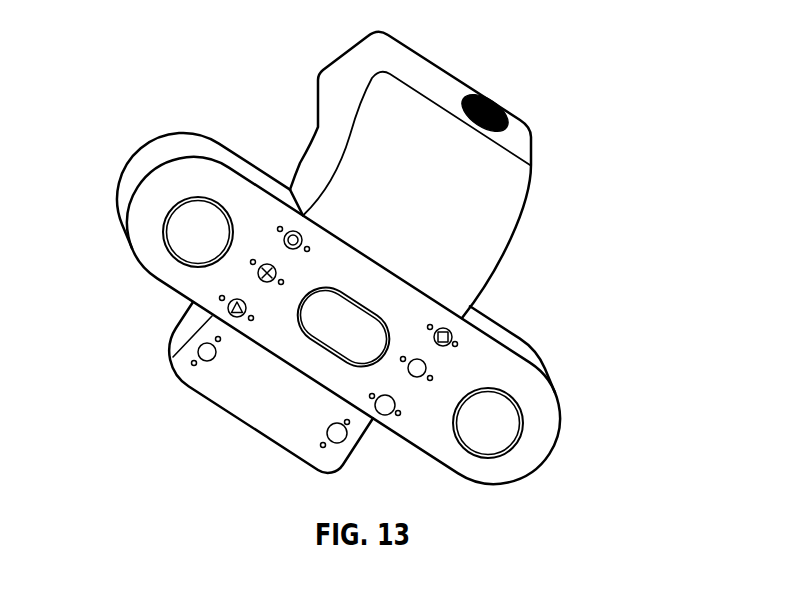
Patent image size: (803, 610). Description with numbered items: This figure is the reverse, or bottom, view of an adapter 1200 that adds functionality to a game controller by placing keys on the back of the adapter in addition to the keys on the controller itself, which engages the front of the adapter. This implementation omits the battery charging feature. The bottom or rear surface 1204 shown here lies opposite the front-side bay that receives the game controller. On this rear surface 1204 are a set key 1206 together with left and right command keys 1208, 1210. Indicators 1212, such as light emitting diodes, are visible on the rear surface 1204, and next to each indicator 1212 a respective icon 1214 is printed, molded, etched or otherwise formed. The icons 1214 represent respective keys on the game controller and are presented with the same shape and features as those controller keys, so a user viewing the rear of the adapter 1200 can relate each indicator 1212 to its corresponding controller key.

The adapter 1200 is at (620, 226).
The bottom or rear surface 1204 is at (477, 235).
The set key 1206 is at (313, 330).
The left command key 1208 is at (178, 248).
The right command key 1210 is at (513, 442).
The indicators 1212 is at (279, 229).
The icons 1214 is at (196, 353).